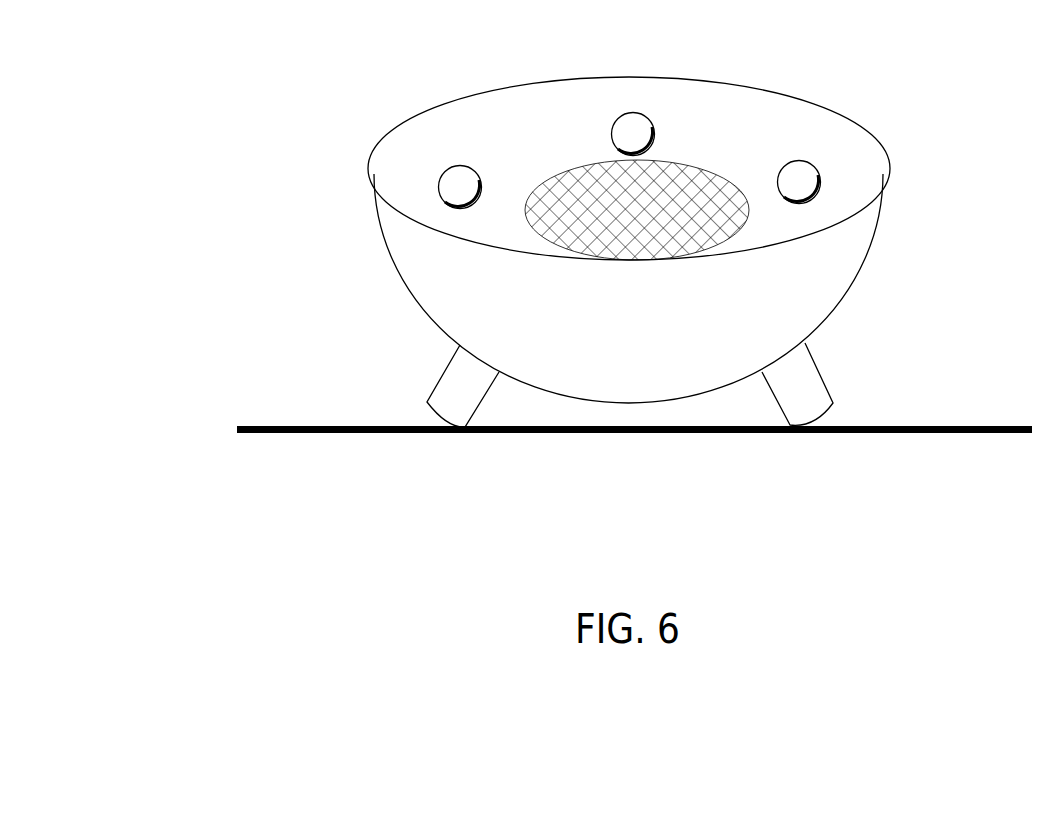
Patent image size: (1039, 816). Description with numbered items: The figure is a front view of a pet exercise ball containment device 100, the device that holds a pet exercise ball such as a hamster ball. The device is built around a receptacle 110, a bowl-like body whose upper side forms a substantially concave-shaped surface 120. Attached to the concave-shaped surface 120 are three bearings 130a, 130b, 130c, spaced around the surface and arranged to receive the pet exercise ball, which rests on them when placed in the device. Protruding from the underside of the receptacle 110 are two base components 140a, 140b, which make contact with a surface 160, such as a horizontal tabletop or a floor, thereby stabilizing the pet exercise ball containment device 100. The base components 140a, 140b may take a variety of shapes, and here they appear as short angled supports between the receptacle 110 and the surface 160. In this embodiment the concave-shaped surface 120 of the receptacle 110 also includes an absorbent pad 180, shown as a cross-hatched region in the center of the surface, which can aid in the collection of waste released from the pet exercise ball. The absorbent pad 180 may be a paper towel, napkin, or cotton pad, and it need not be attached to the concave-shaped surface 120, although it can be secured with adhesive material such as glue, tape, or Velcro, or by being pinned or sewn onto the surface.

The pet exercise ball containment device 100 is at (318, 113).
The receptacle 110 is at (818, 292).
The substantially concave-shaped surface 120 is at (783, 117).
The bearing 130a is at (457, 190).
The bearing 130b is at (810, 185).
The bearing 130c is at (627, 130).
The base component 140a is at (443, 390).
The base component 140b is at (808, 387).
The surface 160 is at (313, 438).
The absorbent pad 180 is at (690, 178).